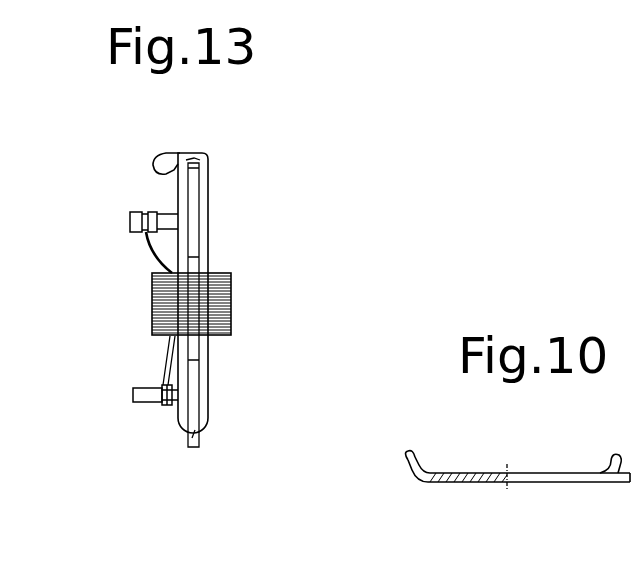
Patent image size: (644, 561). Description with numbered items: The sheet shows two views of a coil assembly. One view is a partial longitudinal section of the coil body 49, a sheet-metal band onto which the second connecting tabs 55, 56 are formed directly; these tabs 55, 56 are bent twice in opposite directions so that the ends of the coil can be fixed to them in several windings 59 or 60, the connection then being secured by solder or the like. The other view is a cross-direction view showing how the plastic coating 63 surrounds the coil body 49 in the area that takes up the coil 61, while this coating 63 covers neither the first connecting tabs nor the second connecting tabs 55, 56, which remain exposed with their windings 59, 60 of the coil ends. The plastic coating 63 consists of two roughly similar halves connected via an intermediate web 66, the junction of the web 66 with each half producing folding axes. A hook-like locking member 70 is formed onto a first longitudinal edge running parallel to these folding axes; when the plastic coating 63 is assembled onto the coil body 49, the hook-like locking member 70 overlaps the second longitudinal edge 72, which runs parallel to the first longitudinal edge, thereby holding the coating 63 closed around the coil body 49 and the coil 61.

In FIG. 13, the coil body 49 is at (193, 198).
In FIG. 10, the coil body 49 is at (484, 488).
In FIG. 13, the second connecting tab 55 is at (130, 222).
In FIG. 10, the second connecting tab 55 is at (616, 452).
In FIG. 13, the second connecting tab 56 is at (130, 392).
In FIG. 10, the second connecting tab 56 is at (408, 452).
In FIG. 13, the windings 59 is at (170, 406).
In FIG. 13, the windings 60 is at (154, 212).
In FIG. 13, the coil 61 is at (232, 299).
In FIG. 13, the plastic coating 63 is at (213, 378).
In FIG. 13, the intermediate web 66 is at (190, 434).
In FIG. 13, the hook-like locking member 70 is at (168, 158).
In FIG. 13, the second longitudinal edge 72 is at (197, 160).